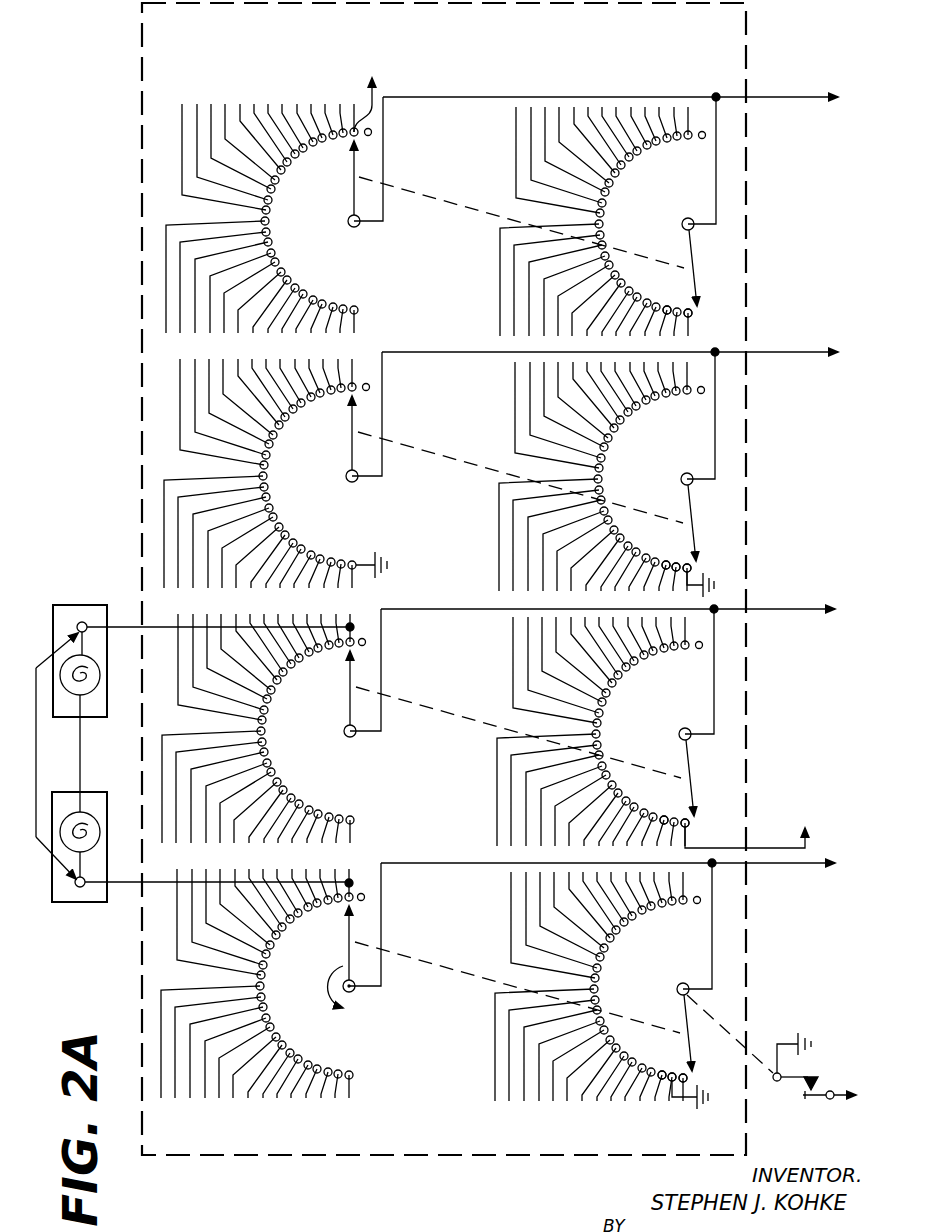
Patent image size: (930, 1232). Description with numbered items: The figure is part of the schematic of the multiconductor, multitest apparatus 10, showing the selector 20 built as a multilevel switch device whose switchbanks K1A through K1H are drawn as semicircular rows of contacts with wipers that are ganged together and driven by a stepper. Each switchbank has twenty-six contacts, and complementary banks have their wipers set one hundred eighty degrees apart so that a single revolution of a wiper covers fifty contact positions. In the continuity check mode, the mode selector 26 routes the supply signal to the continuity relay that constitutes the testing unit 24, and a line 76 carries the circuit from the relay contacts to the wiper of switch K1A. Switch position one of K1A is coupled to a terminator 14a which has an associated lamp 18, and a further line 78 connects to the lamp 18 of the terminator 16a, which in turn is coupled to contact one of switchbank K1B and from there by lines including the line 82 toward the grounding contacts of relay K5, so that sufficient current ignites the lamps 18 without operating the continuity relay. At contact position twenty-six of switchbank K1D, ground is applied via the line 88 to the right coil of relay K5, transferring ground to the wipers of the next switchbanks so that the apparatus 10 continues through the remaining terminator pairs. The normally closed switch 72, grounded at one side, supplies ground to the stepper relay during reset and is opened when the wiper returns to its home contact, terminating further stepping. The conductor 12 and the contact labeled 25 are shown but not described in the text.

The multiconductor, multitest apparatus 10 is at (78, 413).
The selector 20 is at (140, 461).
The terminator 16a is at (201, 668).
The terminator 14a is at (71, 904).
The connecting conductor with arrows 12 is at (53, 756).
The lamp 18 is at (72, 700).
The further line 78 is at (94, 779).
The line 82 is at (796, 608).
The line 88 is at (775, 848).
The line 76 is at (775, 864).
The normally closed switch 72 is at (808, 1100).
The testing unit 24 is at (658, 682).
The switch contact 25 is at (669, 812).
The mode selector 26 is at (681, 685).